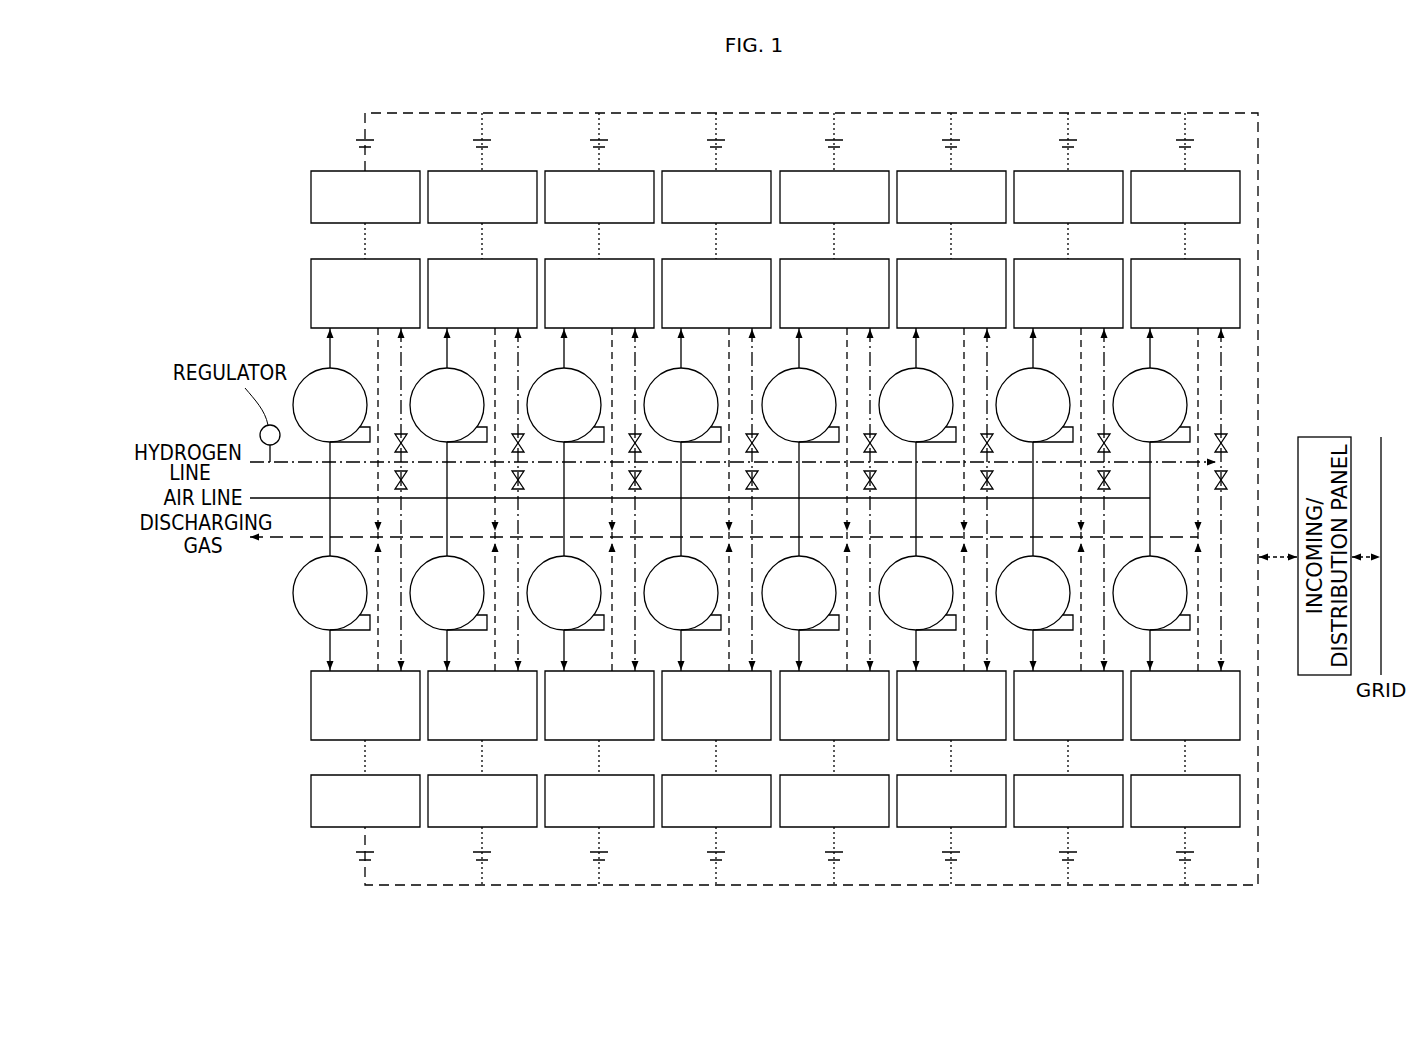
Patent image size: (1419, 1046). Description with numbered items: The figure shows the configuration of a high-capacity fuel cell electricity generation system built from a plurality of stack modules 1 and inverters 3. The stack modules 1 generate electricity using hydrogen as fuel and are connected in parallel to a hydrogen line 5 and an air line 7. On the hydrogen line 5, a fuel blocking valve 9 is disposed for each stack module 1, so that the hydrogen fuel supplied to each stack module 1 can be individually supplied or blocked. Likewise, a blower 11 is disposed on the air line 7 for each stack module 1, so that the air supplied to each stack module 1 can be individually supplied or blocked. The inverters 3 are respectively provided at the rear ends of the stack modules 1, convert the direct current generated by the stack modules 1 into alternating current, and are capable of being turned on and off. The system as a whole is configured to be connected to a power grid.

The stack module 1 is at (1303, 712).
The inverter 3 is at (1305, 808).
The hydrogen line 5 is at (255, 458).
The air line 7 is at (287, 542).
The fuel blocking valve 9 is at (1228, 440).
The blower 11 is at (1290, 345).